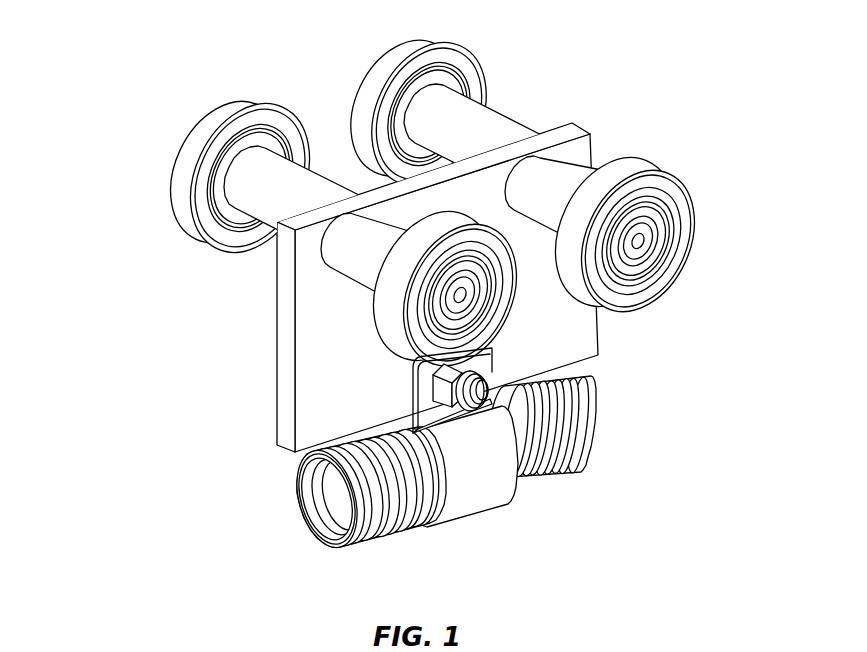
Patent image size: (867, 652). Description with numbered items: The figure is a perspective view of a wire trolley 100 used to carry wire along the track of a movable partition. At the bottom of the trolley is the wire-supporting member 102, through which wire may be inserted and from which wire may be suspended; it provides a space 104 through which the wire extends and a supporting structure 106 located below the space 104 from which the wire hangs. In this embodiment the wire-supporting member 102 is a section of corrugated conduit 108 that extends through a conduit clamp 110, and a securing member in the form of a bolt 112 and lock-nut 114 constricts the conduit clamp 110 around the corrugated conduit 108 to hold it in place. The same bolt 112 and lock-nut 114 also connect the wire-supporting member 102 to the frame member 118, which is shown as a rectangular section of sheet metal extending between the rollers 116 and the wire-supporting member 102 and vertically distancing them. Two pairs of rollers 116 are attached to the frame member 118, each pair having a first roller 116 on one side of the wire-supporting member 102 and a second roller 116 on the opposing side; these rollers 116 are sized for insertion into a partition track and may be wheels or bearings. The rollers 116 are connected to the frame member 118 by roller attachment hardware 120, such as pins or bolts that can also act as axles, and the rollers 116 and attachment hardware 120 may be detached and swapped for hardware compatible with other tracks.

The wire trolley 100 is at (110, 87).
The wire-supporting member 102 is at (430, 485).
The space 104 is at (310, 488).
The supporting structure 106 is at (445, 532).
The section of corrugated conduit 108 is at (577, 438).
The conduit clamp 110 is at (472, 500).
The bolt 112 is at (483, 388).
The lock-nut 114 is at (444, 392).
The roller 116 is at (250, 123).
The frame member 118 is at (310, 353).
The roller attachment hardware 120 is at (640, 241).